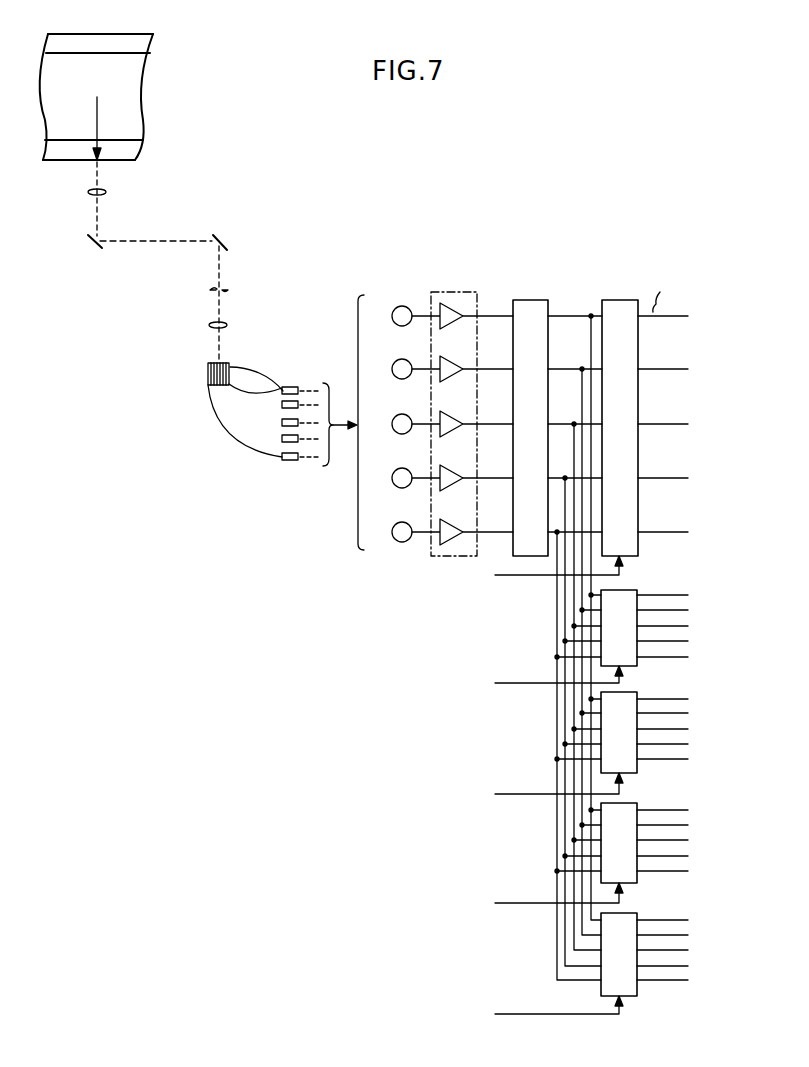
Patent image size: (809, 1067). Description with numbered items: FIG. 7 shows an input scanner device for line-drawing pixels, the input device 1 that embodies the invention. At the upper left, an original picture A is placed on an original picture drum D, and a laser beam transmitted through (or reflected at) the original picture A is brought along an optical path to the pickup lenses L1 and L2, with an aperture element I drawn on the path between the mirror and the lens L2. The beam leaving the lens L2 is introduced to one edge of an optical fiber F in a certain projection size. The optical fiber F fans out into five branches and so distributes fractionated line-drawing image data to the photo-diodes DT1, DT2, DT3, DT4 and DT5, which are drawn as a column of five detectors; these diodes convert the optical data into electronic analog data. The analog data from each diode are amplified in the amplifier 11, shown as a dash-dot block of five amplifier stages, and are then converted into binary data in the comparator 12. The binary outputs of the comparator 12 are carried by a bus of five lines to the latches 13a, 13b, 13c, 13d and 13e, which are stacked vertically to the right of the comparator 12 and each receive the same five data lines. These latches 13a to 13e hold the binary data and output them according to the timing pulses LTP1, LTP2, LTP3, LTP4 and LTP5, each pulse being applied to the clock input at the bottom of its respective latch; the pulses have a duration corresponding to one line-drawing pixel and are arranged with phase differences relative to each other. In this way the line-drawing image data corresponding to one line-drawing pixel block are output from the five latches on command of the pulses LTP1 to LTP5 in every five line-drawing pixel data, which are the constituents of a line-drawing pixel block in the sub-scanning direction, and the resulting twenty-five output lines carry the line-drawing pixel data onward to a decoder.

The image reading apparatus 1 is at (646, 243).
The amplifier 11 is at (469, 296).
The comparator 12 is at (528, 300).
The latch 13a is at (628, 300).
The latch 13b is at (622, 598).
The latch 13c is at (622, 705).
The latch 13d is at (622, 815).
The latch 13e is at (622, 925).
The original picture drum D is at (136, 128).
The original picture A is at (82, 161).
The pickup lens L1 is at (115, 191).
The pickup lens L2 is at (229, 326).
The iris I is at (224, 291).
The optical fiber F is at (231, 366).
The photo-diode DT1 is at (386, 316).
The photo-diode DT2 is at (386, 369).
The photo-diode DT3 is at (386, 424).
The photo-diode DT4 is at (386, 478).
The photo-diode DT5 is at (386, 532).
The timing pulse LTP1 is at (535, 570).
The timing pulse LTP2 is at (535, 679).
The timing pulse LTP3 is at (535, 788).
The timing pulse LTP4 is at (535, 898).
The timing pulse LTP5 is at (535, 1010).